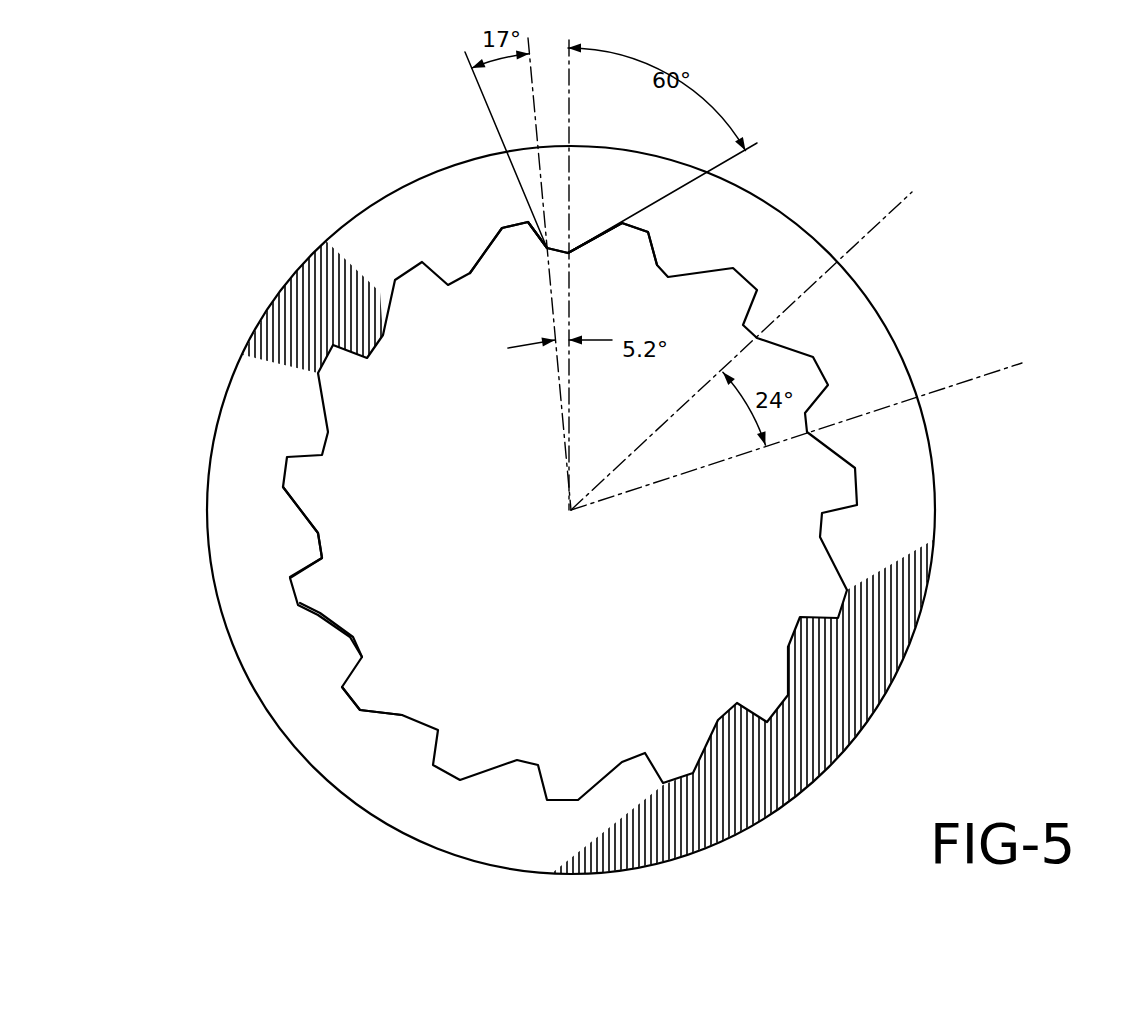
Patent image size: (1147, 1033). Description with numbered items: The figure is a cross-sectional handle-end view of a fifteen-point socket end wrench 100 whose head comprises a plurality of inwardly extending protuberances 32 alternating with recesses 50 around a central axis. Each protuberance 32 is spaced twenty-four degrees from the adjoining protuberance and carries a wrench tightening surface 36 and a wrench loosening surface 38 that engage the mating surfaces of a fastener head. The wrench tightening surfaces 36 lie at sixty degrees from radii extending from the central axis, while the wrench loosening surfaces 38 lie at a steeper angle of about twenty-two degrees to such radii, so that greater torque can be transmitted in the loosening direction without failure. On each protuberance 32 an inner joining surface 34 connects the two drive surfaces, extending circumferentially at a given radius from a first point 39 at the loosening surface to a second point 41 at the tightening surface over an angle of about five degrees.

The socket end wrench 100 is at (263, 185).
The protuberance 32 is at (312, 435).
The inner joining surface 34 is at (563, 257).
The wrench tightening surface 36 is at (307, 565).
The wrench loosening surface 38 is at (323, 623).
The first point 39 is at (547, 256).
The second point 41 is at (573, 254).
The recess 50 is at (352, 700).